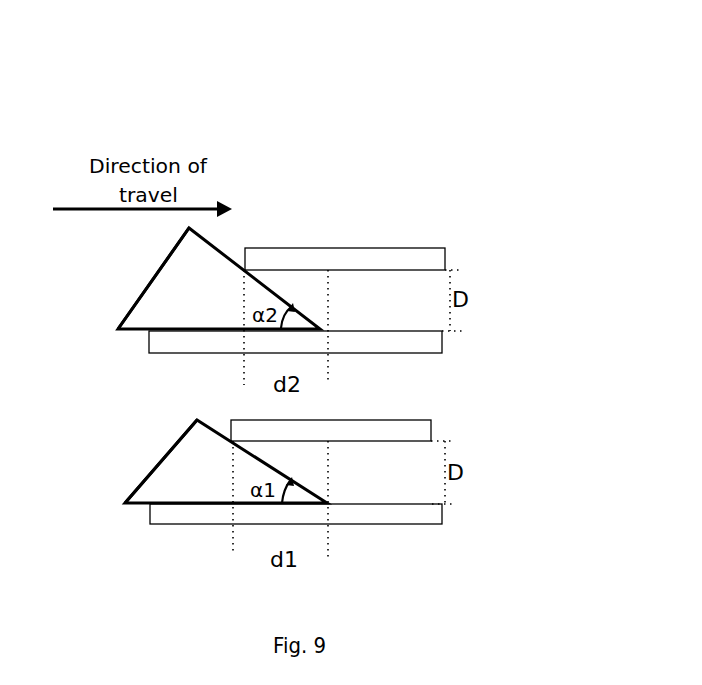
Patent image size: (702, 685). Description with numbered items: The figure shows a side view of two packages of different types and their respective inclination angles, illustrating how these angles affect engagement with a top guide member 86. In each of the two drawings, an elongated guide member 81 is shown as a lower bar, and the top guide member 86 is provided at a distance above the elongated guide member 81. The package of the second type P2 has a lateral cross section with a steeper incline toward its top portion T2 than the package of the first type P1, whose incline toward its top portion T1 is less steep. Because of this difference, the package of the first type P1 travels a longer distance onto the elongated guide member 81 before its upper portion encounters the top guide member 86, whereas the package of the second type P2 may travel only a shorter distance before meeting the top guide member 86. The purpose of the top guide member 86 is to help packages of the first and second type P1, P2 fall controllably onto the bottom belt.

The top guide member 86 is at (434, 262).
The elongated guide member 81 is at (433, 339).
The top portion of first package type T1 is at (196, 421).
The top portion of second package type T2 is at (189, 229).
The package of first type P1 is at (178, 465).
The package of second type P2 is at (178, 284).